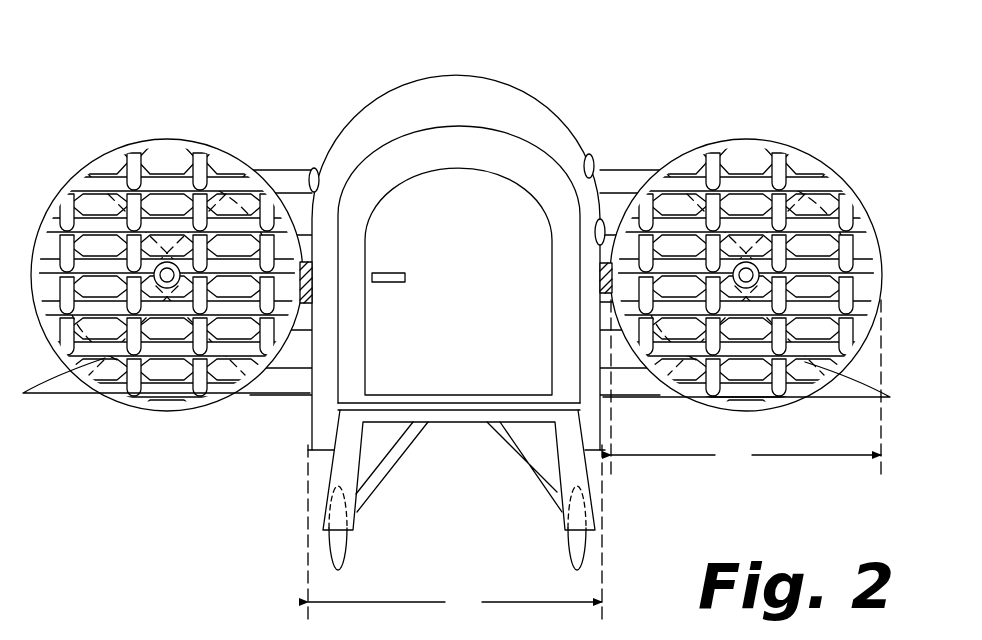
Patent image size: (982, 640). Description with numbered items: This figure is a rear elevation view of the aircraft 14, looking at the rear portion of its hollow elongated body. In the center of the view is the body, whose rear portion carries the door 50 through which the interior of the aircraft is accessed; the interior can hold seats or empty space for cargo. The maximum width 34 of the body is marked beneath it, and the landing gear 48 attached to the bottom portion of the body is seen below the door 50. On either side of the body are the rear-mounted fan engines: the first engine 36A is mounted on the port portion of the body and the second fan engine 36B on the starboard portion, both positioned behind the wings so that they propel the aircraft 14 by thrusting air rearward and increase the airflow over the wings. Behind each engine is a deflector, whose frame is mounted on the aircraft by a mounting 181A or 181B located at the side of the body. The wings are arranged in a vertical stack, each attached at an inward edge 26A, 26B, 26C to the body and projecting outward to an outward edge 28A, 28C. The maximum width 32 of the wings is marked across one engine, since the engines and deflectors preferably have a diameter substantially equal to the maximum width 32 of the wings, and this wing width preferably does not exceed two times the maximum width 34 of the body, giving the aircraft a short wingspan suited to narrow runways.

The aircraft 14 is at (478, 304).
The inward edge of wing 26A is at (590, 153).
The inward edge of wing 26B is at (603, 217).
The inward edge of wing 26C is at (314, 168).
The outward edge of wing 28A is at (660, 172).
The outward edge of wing 28C is at (275, 168).
The door 50 is at (507, 186).
The mounting 181A is at (604, 294).
The mounting 181B is at (312, 272).
The first engine 36A is at (82, 360).
The second fan engine 36B is at (832, 362).
The maximum width of the wings 32 is at (746, 389).
The maximum width of the body 34 is at (455, 532).
The landing gear 48 is at (552, 510).